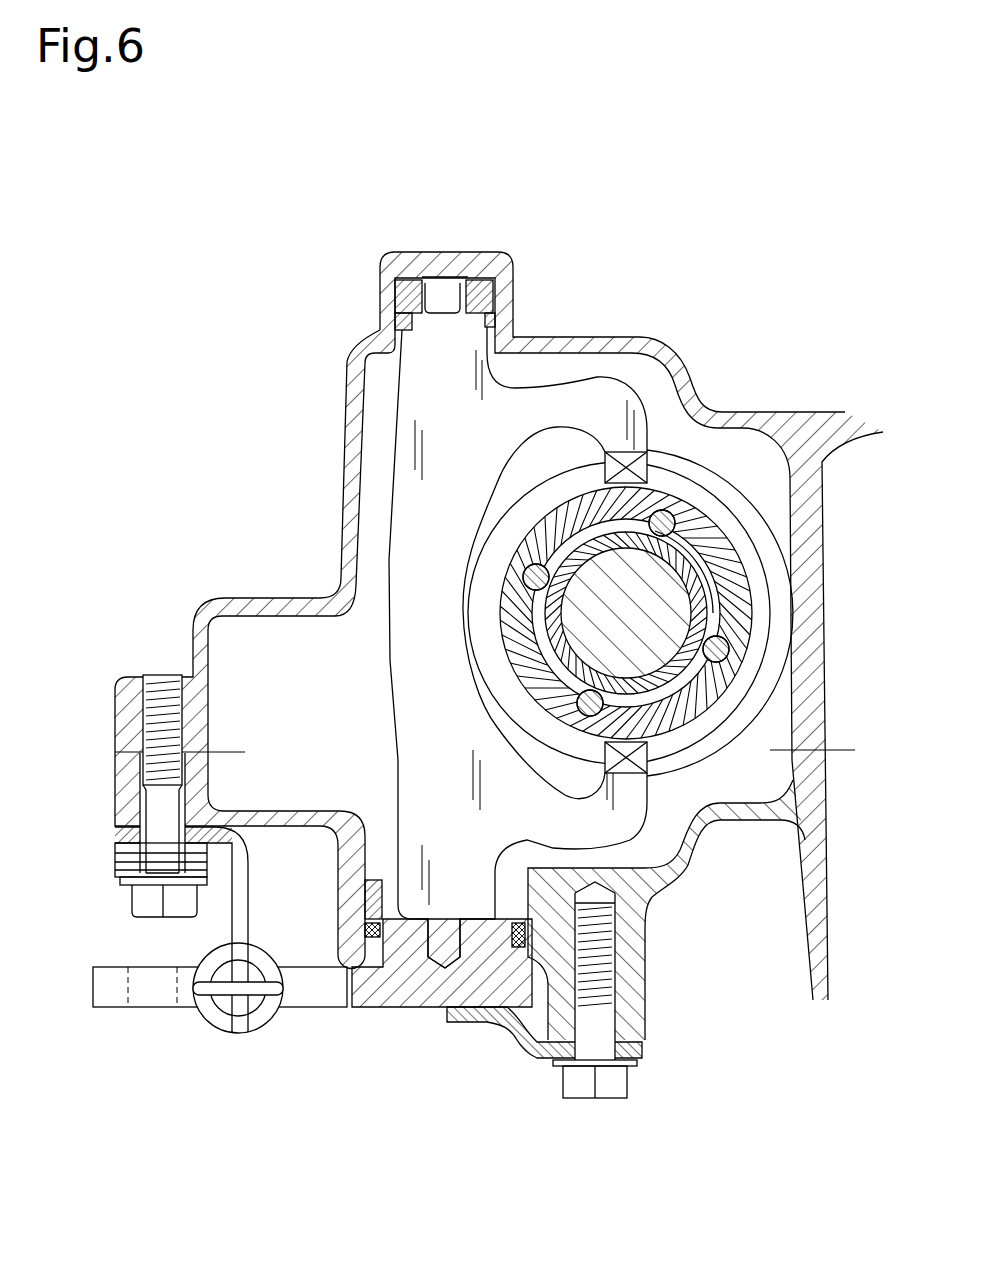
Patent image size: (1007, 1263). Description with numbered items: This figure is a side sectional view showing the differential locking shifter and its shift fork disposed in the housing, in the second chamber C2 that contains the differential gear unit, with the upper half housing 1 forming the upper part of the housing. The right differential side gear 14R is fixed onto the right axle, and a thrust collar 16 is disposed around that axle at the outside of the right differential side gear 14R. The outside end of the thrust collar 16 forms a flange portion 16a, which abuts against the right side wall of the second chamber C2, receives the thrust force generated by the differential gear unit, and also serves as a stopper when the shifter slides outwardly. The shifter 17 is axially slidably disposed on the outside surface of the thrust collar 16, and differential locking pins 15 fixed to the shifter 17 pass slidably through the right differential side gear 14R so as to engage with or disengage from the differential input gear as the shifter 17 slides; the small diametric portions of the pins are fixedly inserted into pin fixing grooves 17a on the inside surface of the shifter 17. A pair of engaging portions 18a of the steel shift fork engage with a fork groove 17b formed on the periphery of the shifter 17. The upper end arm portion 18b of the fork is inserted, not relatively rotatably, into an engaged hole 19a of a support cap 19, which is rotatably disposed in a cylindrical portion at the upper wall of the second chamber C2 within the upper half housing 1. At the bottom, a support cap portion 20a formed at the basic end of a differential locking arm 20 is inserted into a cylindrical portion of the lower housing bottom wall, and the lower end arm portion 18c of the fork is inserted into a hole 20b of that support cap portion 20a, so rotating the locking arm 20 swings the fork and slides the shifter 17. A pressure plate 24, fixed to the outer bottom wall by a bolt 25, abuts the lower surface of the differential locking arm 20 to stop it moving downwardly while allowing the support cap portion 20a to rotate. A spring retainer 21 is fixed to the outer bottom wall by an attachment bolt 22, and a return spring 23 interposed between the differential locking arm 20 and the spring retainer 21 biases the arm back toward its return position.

The upper half housing 1 is at (462, 252).
The right differential side gear 14R is at (577, 630).
The differential locking pins 15 is at (510, 557).
The thrust collar 16 is at (562, 675).
The flange portion 16a is at (722, 600).
The shifter 17 is at (670, 723).
The pin fixing grooves 17a is at (712, 632).
The fork groove 17b is at (717, 520).
The engaging portions 18a is at (642, 472).
The upper end arm portion 18b is at (495, 280).
The lower end arm portion 18c is at (450, 933).
The support cap 19 is at (450, 297).
The engaged hole 19a is at (428, 288).
The differential locking arm 20 is at (115, 1007).
The support cap portion 20a is at (352, 907).
The hole 20b is at (430, 913).
The spring retainer 21 is at (248, 890).
The attachment bolt 22 is at (163, 675).
The return spring 23 is at (277, 1013).
The pressure plate 24 is at (488, 1022).
The bolt 25 is at (630, 1083).
The second chamber C2 is at (311, 700).